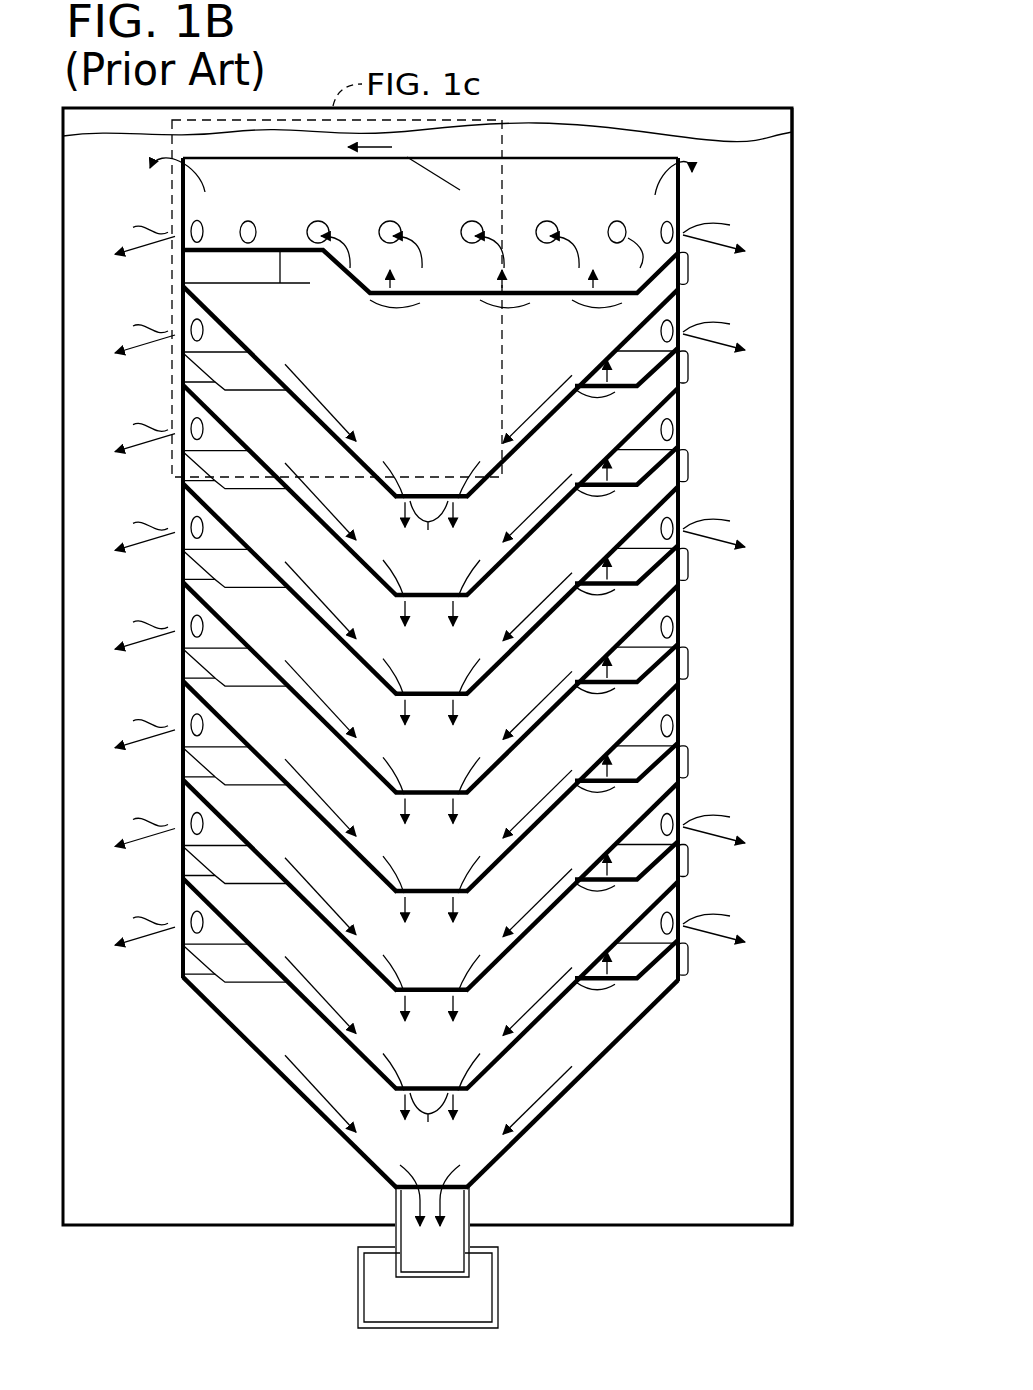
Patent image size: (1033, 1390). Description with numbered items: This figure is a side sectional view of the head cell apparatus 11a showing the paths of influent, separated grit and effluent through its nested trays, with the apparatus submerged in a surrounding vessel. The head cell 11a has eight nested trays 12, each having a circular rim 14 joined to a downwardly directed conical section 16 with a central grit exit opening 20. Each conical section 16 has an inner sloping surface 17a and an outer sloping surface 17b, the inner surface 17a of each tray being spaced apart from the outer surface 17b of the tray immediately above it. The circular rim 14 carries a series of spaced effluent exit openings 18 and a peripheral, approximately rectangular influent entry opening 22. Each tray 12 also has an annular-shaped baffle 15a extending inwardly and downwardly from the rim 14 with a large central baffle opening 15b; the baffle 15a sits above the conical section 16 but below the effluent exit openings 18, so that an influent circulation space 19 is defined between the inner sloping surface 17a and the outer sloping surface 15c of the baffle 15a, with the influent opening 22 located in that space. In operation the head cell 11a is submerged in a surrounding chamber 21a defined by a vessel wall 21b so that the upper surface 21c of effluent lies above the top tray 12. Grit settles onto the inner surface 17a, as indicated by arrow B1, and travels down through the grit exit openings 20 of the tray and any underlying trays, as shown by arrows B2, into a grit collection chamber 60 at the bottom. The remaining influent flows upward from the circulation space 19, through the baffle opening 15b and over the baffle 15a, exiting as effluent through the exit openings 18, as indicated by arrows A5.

The head cell apparatus 11a is at (707, 102).
The tray 12 is at (178, 300).
The circular rim 14 is at (681, 305).
The annular-shaped baffle 15a is at (388, 296).
The central baffle opening 15b is at (450, 298).
The outer sloping surface of the baffle 15c is at (212, 388).
The conical section 16 is at (237, 320).
The inner sloping surface 17a is at (362, 467).
The outer sloping surface 17b is at (360, 468).
The effluent exit openings 18 is at (315, 225).
The influent circulation space 19 is at (689, 265).
The grit exit opening 20 is at (428, 494).
The surrounding chamber 21a is at (165, 1158).
The vessel wall 21b is at (792, 510).
The upper surface of head cell effluent 21c is at (578, 130).
The influent entry opening 22 is at (237, 270).
The grit collection chamber 60 is at (500, 1290).
The effluent flow arrows A5 is at (431, 578).
The grit separation arrow B1 is at (318, 390).
The grit travel arrows B2 is at (430, 863).